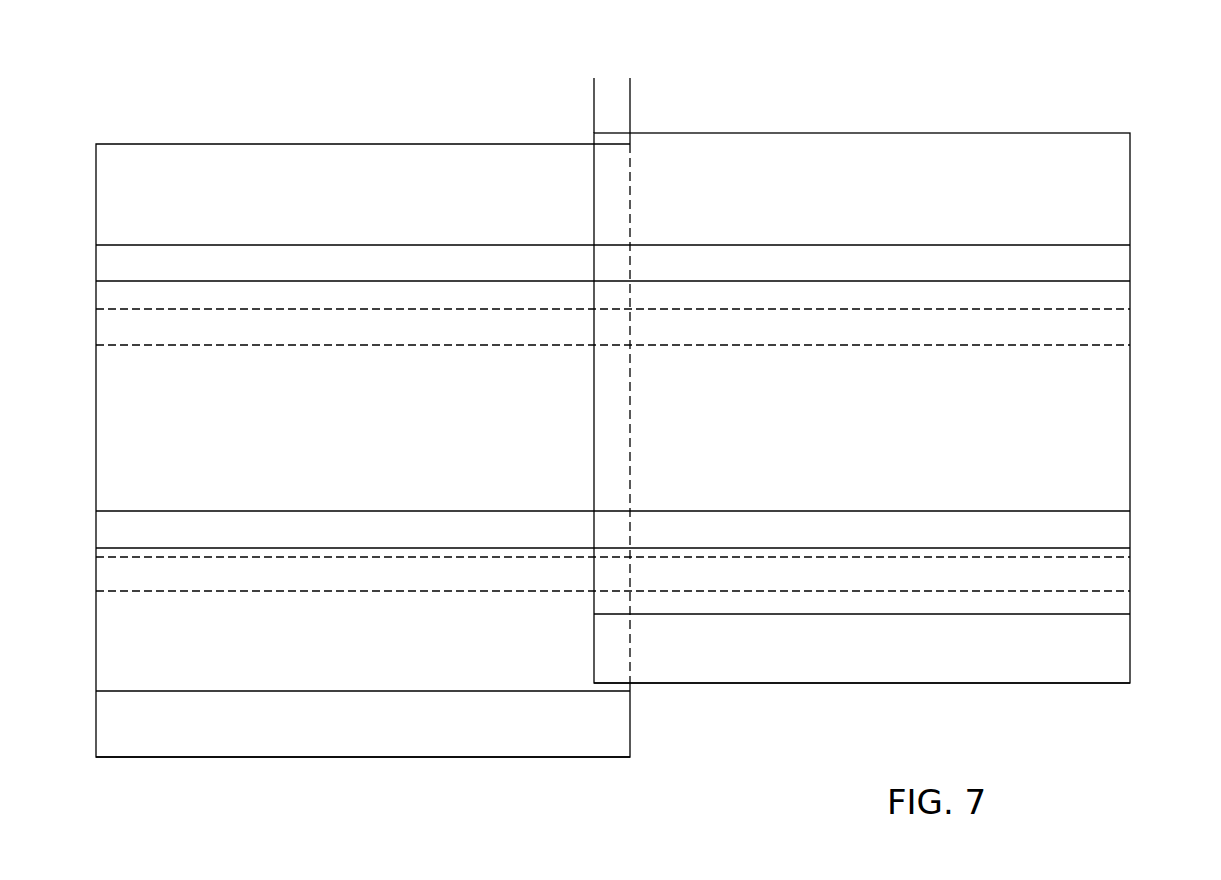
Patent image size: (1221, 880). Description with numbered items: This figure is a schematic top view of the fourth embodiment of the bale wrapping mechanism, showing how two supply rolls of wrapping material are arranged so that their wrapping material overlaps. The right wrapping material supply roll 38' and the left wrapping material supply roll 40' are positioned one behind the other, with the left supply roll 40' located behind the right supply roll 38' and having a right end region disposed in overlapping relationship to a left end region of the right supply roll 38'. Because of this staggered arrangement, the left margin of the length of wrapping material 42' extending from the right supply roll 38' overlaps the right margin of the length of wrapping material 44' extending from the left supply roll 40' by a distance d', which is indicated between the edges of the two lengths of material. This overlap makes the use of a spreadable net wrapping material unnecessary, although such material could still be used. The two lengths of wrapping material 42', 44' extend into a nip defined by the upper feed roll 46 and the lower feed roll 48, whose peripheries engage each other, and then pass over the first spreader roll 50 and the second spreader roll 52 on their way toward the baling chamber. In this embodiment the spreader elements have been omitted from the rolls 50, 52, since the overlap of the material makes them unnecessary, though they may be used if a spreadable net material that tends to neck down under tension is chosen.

The right wrapping material supply roll 38' is at (862, 714).
The left wrapping material supply roll 40' is at (363, 758).
The length of wrapping material 42' is at (862, 357).
The length of wrapping material 44' is at (363, 392).
The upper feed roll 46 is at (1107, 592).
The lower feed roll 48 is at (1107, 511).
The first spreader roll 50 is at (1107, 347).
The second spreader roll 52 is at (1107, 245).
The overlap distance d' is at (612, 111).